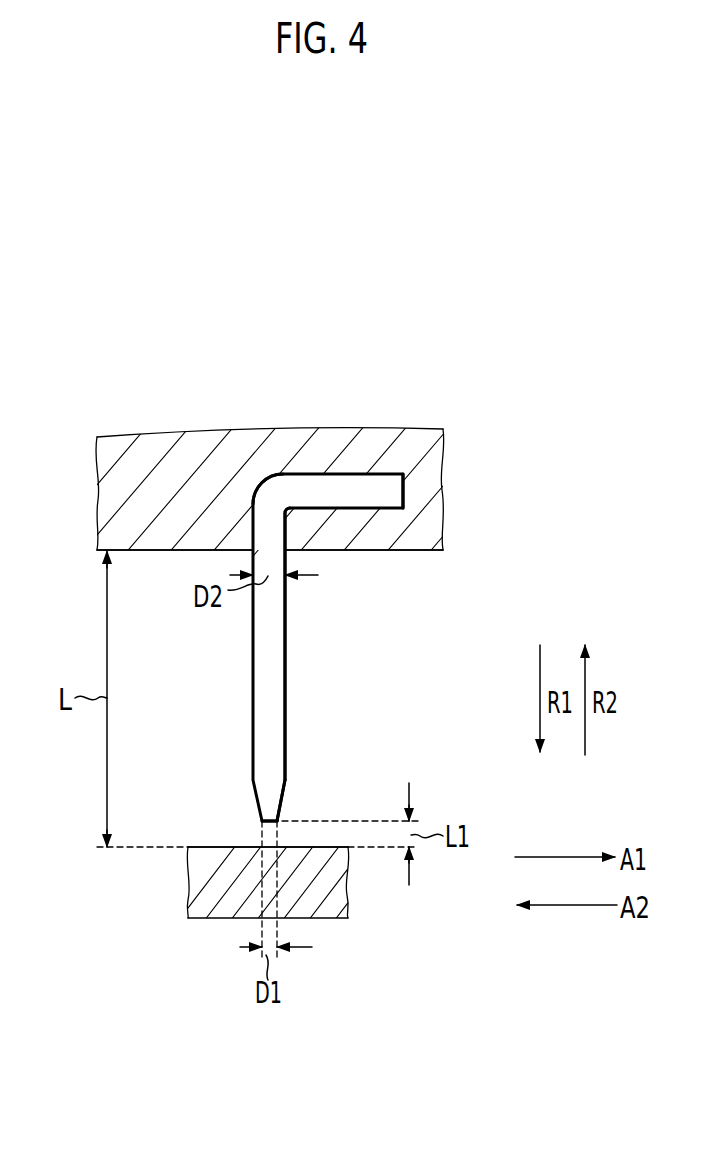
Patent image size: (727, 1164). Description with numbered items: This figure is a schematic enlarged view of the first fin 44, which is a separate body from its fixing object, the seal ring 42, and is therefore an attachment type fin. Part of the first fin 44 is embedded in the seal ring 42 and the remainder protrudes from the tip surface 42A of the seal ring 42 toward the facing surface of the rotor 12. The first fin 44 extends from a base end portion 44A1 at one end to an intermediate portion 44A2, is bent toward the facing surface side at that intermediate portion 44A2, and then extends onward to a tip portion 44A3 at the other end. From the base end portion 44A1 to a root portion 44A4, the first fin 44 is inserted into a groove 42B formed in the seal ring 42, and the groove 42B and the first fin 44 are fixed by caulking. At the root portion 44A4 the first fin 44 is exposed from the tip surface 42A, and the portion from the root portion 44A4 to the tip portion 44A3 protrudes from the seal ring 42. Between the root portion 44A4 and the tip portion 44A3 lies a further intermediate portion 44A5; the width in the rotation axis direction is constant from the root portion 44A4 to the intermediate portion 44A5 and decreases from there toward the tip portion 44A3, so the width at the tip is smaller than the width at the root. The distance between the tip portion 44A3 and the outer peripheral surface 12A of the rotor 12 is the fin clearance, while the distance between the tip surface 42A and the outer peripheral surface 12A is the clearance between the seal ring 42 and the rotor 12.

The rotor 12 is at (225, 882).
The outer peripheral surface 12A is at (218, 848).
The seal ring 42 is at (120, 490).
The tip surface 42A is at (142, 552).
The groove 42B is at (314, 484).
The first fin 44 is at (237, 668).
The base end portion 44A1 is at (383, 487).
The intermediate portion 44A2 is at (272, 493).
The tip portion 44A3 is at (262, 834).
The root portion 44A4 is at (273, 540).
The intermediate portion 44A5 is at (268, 780).